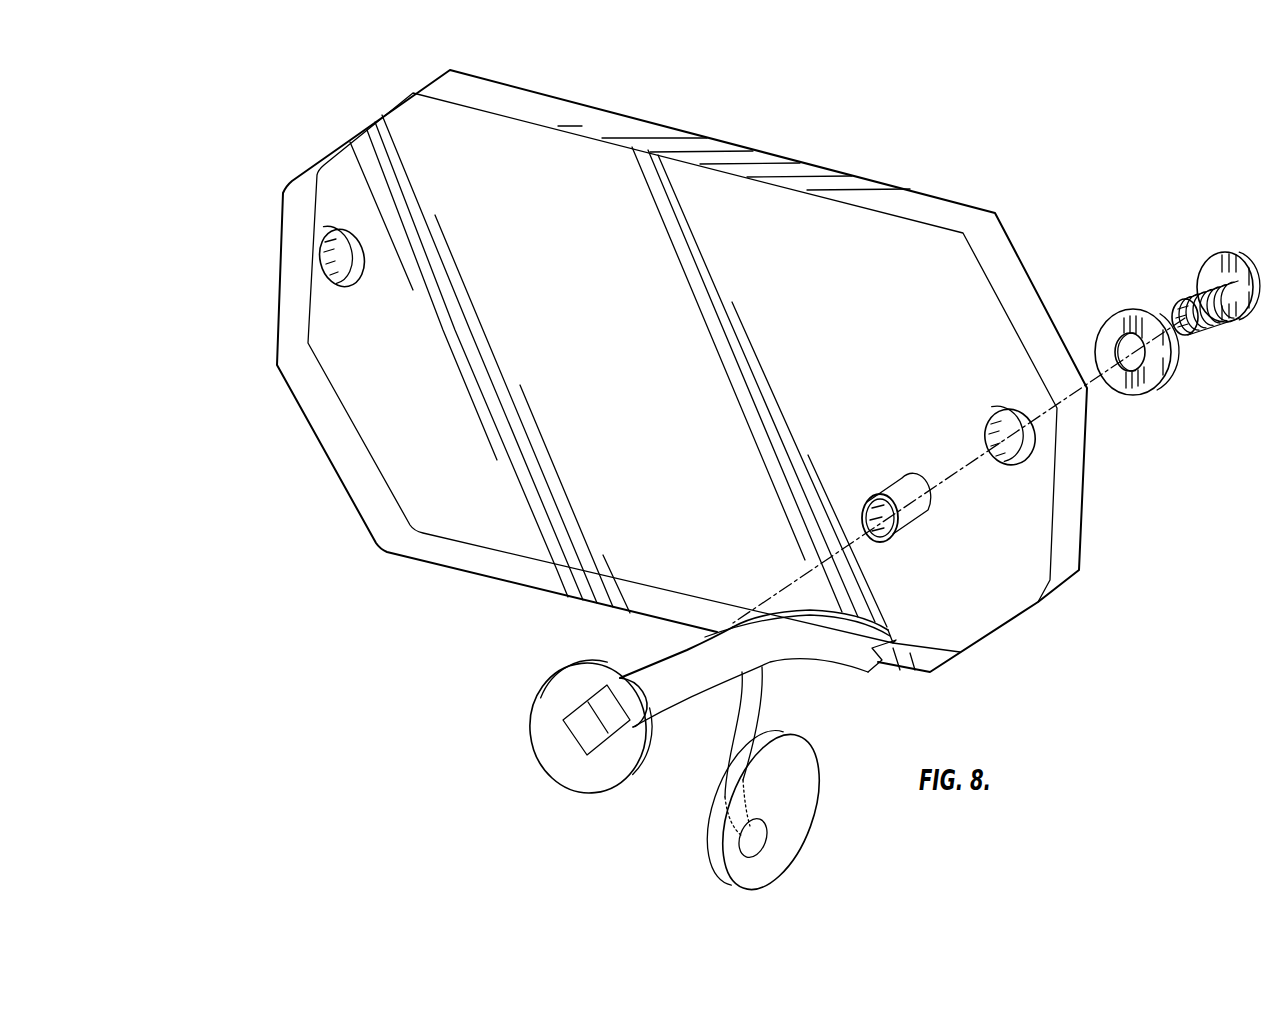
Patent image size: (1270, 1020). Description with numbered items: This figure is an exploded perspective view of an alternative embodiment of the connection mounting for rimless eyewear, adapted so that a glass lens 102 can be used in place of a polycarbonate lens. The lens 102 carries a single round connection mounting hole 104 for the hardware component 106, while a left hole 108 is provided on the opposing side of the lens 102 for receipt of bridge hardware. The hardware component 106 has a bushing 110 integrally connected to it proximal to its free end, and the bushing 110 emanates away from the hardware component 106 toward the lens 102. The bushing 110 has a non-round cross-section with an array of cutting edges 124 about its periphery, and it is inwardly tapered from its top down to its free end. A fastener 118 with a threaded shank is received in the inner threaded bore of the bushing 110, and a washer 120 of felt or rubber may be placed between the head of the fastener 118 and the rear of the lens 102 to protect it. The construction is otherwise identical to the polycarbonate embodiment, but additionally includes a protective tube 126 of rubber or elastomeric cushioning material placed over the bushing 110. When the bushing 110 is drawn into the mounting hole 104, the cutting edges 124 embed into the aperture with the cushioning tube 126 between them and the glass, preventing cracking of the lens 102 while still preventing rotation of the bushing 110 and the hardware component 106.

The lens 102 is at (813, 223).
The connection mounting hole 104 is at (1011, 410).
The hardware component 106 is at (795, 645).
The left hole 108 is at (340, 268).
The bushing 110 is at (629, 690).
The fastener 118 is at (1247, 261).
The washer 120 is at (1157, 367).
The cutting edges 124 is at (590, 697).
The protective tube 126 is at (920, 520).